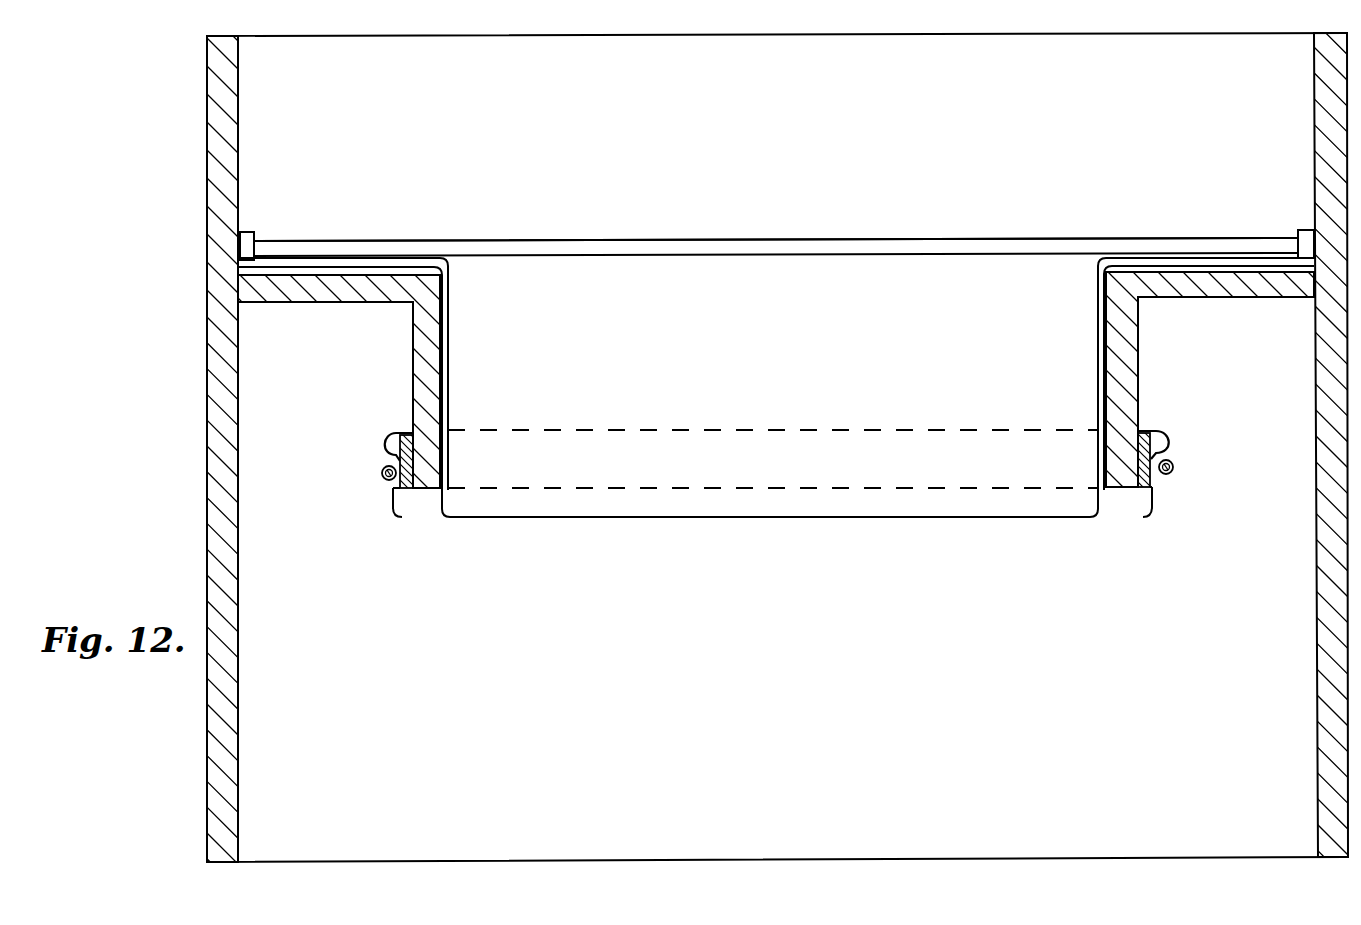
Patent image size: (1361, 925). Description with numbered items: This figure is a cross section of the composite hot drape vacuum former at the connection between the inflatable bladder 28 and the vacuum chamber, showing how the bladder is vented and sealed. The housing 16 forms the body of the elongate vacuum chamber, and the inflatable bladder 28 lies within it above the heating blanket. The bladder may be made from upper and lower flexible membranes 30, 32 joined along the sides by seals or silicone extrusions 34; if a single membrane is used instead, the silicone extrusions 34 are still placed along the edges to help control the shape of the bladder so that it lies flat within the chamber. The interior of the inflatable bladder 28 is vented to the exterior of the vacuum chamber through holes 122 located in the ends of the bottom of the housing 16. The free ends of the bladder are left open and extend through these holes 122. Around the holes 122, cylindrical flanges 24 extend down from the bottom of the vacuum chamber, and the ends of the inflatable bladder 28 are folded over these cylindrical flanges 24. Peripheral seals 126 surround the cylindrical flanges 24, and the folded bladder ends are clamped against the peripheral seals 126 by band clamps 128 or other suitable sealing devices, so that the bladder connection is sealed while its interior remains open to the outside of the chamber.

The housing 16 is at (199, 410).
The cylindrical flanges 24 is at (413, 384).
The inflatable bladder 28 is at (870, 505).
The upper flexible membrane 30 is at (622, 255).
The lower flexible membrane 32 is at (975, 240).
The silicone extrusions 34 is at (254, 233).
The holes 122 is at (672, 475).
The peripheral seals 126 is at (405, 432).
The band clamps 128 is at (383, 481).